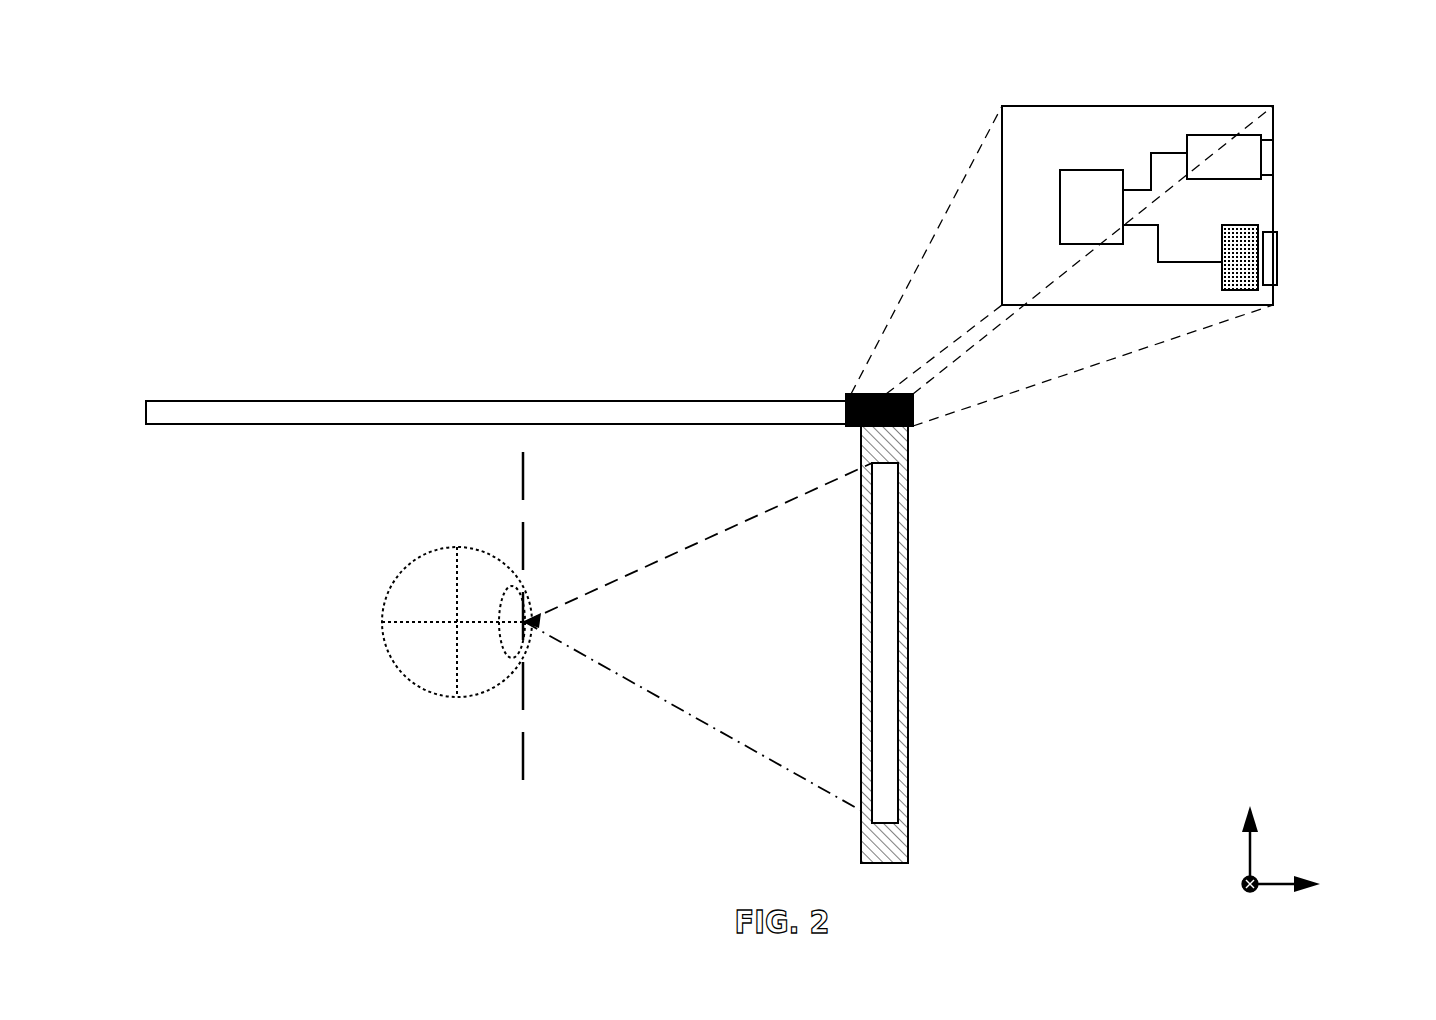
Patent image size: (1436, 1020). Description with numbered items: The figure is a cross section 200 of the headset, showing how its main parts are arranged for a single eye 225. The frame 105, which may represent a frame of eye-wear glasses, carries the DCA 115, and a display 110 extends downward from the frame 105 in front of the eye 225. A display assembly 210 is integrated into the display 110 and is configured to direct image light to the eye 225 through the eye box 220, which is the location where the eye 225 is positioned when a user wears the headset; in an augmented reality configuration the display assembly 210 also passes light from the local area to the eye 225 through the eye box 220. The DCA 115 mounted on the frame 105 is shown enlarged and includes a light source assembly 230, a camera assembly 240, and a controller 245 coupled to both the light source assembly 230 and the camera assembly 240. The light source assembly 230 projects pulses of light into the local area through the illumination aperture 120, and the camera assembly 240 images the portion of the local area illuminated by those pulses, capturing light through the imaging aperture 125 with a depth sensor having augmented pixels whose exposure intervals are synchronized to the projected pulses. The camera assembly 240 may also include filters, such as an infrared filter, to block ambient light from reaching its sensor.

The cross section 200 is at (157, 62).
The frame 105 is at (297, 401).
The DCA 115 is at (848, 394).
The controller 245 is at (1060, 208).
The light source assembly 230 is at (1189, 136).
The illumination aperture 120 is at (1274, 142).
The camera assembly 240 is at (1235, 290).
The imaging aperture 125 is at (1278, 268).
The display assembly 210 is at (880, 537).
The display 110 is at (910, 762).
The eye 225 is at (420, 558).
The eye box 220 is at (522, 715).